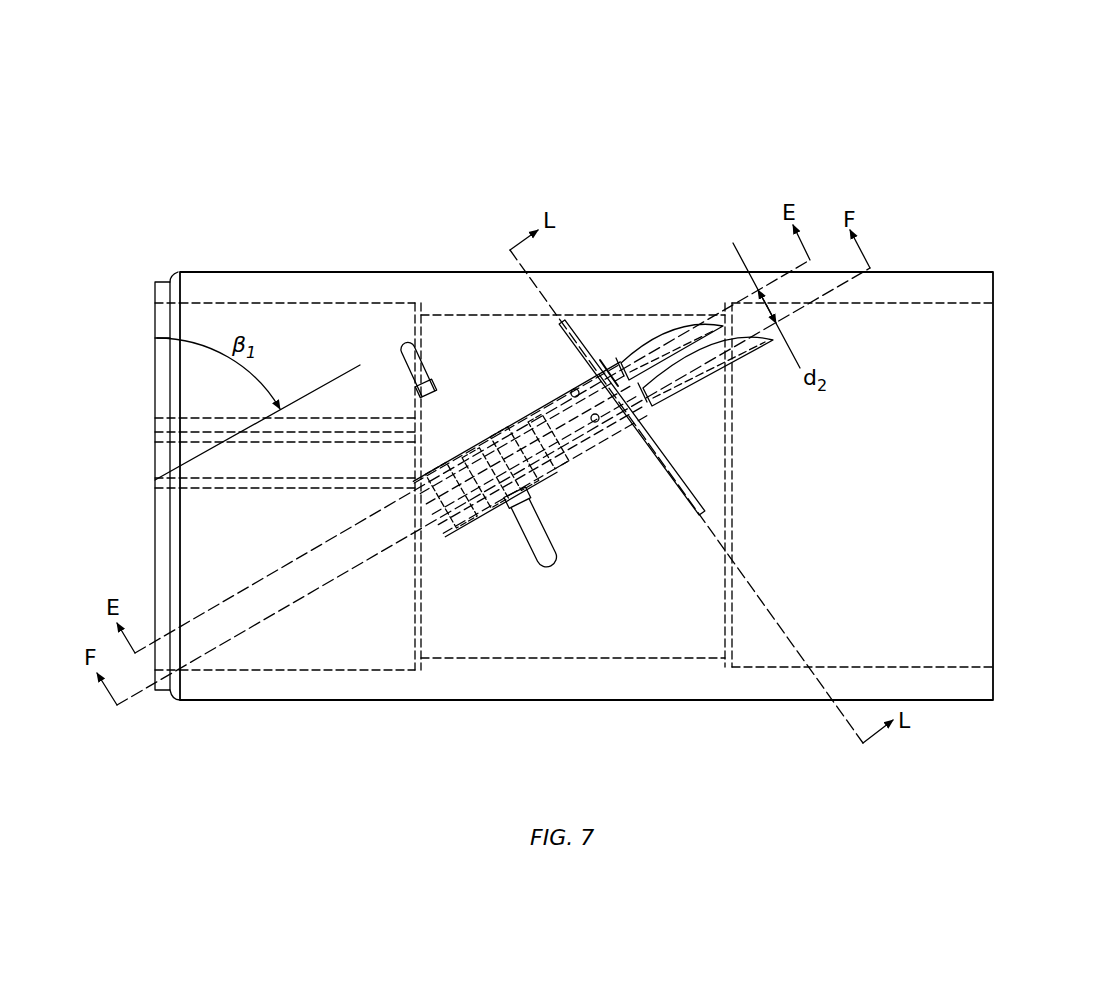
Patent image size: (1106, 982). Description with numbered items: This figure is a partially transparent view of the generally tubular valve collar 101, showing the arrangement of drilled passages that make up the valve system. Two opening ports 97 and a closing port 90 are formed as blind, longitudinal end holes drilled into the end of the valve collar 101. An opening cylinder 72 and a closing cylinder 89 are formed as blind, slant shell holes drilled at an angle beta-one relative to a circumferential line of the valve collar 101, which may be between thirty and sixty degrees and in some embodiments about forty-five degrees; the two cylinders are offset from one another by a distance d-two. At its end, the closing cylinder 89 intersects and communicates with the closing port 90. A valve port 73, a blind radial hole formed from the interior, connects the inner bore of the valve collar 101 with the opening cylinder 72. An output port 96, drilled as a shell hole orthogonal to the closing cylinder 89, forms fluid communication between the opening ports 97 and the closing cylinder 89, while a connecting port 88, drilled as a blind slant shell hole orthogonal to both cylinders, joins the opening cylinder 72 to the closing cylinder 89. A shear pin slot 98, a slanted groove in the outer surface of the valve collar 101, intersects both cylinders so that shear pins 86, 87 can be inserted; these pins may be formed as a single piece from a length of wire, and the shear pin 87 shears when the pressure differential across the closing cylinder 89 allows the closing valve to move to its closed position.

The valve collar 101 is at (999, 169).
The output port 96 is at (463, 445).
The opening ports 97 is at (207, 422).
The closing port 90 is at (223, 487).
The closing cylinder 89 is at (545, 403).
The shear pin 87 is at (608, 368).
The shear pin 86 is at (625, 398).
The opening cylinder 72 is at (578, 448).
The valve port 73 is at (470, 523).
The connecting port 88 is at (540, 522).
The shear pin slot 98 is at (680, 472).